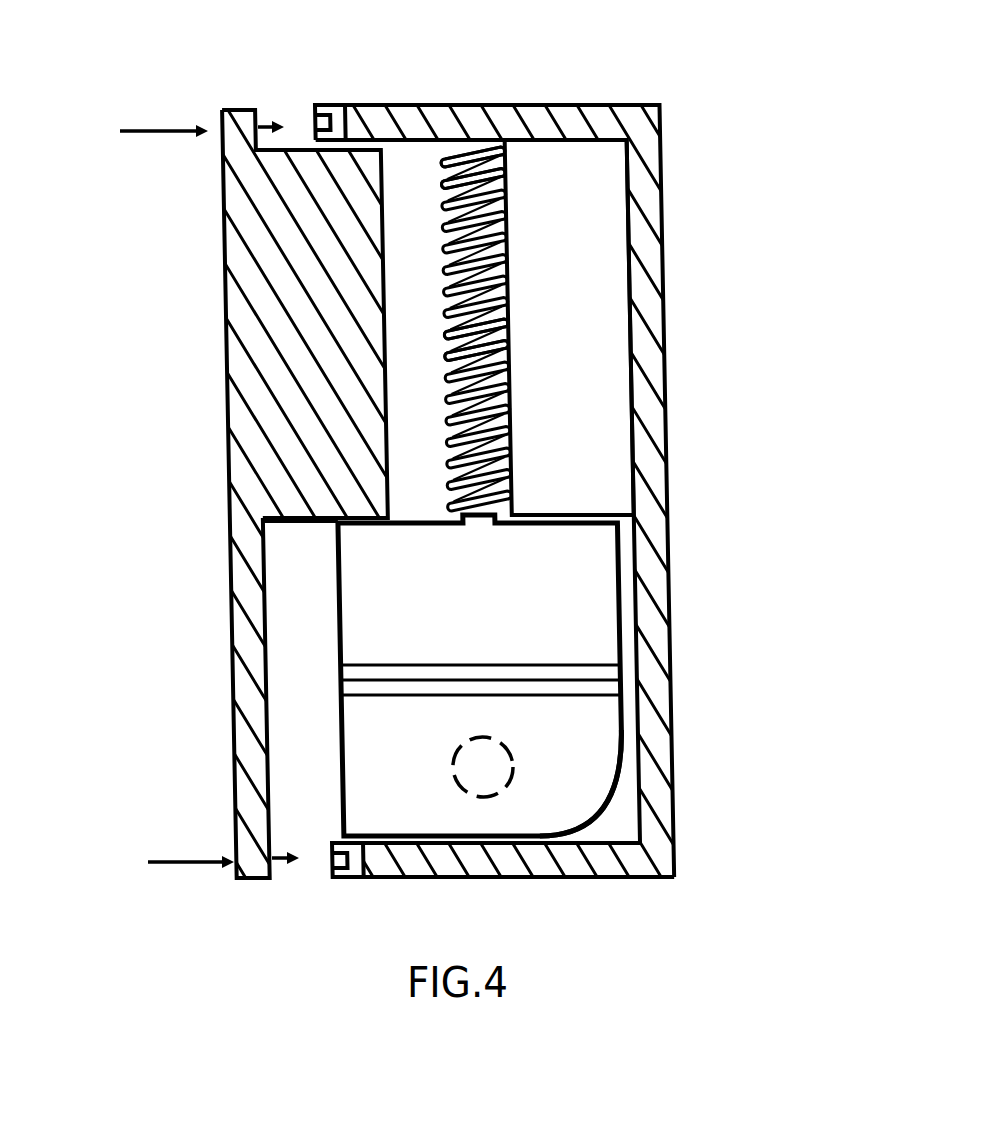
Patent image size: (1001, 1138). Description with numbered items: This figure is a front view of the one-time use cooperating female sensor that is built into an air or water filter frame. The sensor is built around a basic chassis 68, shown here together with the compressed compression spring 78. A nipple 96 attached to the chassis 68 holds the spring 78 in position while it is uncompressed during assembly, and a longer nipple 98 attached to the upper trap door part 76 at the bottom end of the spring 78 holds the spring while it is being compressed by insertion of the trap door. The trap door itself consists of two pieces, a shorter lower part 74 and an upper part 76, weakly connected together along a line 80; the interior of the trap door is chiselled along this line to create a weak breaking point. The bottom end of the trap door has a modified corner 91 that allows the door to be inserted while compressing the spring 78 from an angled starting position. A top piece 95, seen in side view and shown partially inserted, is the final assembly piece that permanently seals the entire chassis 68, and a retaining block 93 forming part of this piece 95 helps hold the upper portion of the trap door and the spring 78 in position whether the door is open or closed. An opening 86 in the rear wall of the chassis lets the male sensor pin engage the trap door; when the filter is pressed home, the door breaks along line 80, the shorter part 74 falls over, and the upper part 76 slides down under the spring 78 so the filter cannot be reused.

The basic chassis 68 is at (577, 282).
The trap door lower piece 74 is at (572, 742).
The trap door upper piece 76 is at (538, 572).
The compression spring 78 is at (440, 245).
The line of weak connection 80 is at (620, 680).
The opening 86 is at (630, 877).
The modified corner 91 is at (510, 785).
The retaining block 93 is at (328, 390).
The top piece 95 is at (250, 580).
The nipple 96 is at (462, 150).
The longer nipple 98 is at (450, 335).